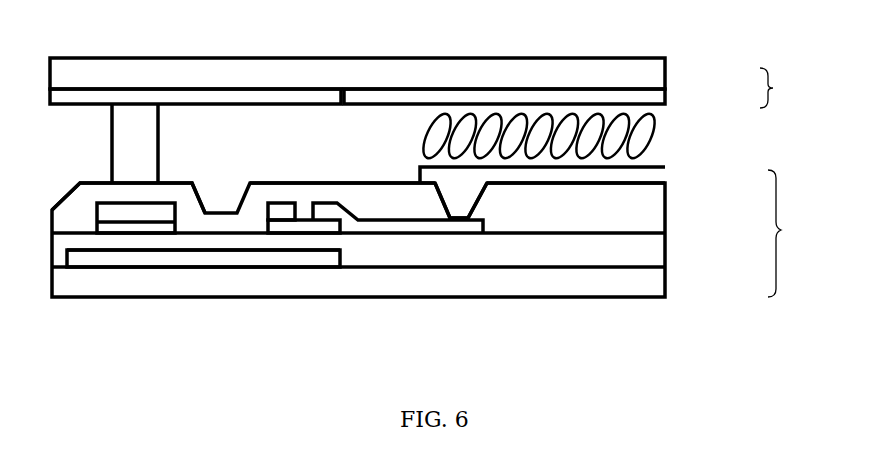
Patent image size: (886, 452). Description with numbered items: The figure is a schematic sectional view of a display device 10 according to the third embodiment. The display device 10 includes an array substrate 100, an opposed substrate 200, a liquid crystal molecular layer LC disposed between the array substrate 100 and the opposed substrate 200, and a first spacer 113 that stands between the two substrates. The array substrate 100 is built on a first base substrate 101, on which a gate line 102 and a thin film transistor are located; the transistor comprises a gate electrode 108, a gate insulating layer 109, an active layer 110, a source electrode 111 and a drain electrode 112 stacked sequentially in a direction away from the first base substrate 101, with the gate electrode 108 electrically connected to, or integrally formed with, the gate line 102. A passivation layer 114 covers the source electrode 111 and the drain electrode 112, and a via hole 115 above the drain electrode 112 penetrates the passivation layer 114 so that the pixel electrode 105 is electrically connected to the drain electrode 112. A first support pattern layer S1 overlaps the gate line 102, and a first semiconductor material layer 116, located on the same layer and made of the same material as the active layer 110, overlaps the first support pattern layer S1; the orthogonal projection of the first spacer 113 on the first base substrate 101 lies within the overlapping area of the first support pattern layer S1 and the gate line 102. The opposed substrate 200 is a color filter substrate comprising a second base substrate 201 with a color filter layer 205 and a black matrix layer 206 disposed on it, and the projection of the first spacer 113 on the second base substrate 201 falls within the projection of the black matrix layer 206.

The display device 10 is at (370, 392).
The array substrate 100 is at (450, 233).
The first base substrate 101 is at (658, 287).
The gate line 102 is at (160, 260).
The pixel electrode 105 is at (658, 175).
The gate electrode 108 is at (305, 258).
The gate insulating layer 109 is at (658, 250).
The active layer 110 is at (302, 228).
The source electrode 111 is at (283, 213).
The drain electrode 112 is at (328, 213).
The first spacer 113 is at (111, 155).
The passivation layer 114 is at (658, 203).
The via hole 115 is at (460, 197).
The first semiconductor material layer 116 is at (120, 225).
The first support pattern layer S1 is at (127, 210).
The opposed substrate 200 is at (801, 88).
The second base substrate 201 is at (655, 75).
The color filter layer 205 is at (440, 98).
The black matrix layer 206 is at (205, 98).
The liquid crystal molecular layer LC is at (640, 140).